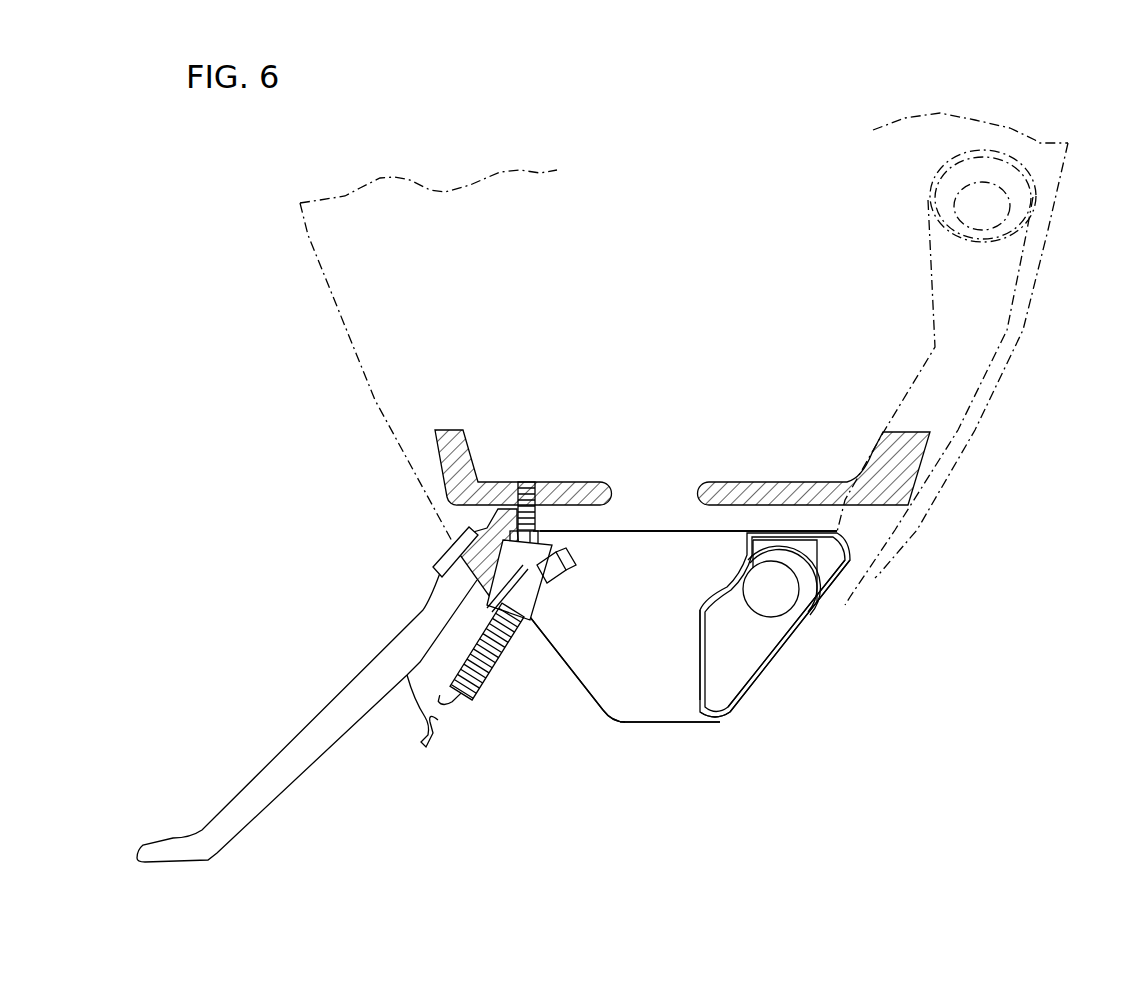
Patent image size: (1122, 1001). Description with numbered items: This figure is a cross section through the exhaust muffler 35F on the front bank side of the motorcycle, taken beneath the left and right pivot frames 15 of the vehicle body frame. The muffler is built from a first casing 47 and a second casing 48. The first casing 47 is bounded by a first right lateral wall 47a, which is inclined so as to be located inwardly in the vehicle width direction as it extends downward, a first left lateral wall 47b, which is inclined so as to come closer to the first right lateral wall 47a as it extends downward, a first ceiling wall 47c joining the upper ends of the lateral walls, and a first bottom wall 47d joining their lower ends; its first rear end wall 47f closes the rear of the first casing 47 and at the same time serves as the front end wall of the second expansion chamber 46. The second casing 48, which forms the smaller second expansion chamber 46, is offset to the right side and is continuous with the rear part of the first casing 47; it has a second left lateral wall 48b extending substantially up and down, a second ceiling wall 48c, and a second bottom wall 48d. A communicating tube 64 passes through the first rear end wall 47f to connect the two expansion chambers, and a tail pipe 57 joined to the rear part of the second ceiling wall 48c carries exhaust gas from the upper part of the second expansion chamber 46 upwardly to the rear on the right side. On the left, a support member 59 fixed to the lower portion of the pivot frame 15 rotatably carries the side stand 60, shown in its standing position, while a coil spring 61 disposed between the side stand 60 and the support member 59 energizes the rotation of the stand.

The pivot frame 15 is at (456, 455).
The exhaust muffler on the front bank side 35F is at (652, 524).
The second expansion chamber 46 is at (752, 660).
The first casing 47 is at (600, 712).
The first right lateral wall 47a is at (793, 643).
The first left lateral wall 47b is at (557, 653).
The first ceiling wall 47c is at (640, 528).
The first bottom wall 47d is at (670, 722).
The first rear end wall 47f is at (645, 722).
The second casing 48 is at (768, 593).
The second left lateral wall 48b is at (700, 633).
The second ceiling wall 48c is at (800, 536).
The second bottom wall 48d is at (728, 720).
The tail pipe 57 is at (928, 284).
The support member 59 is at (493, 510).
The side stand 60 is at (313, 738).
The coil spring 61 is at (483, 686).
The communicating tube 64 is at (790, 583).